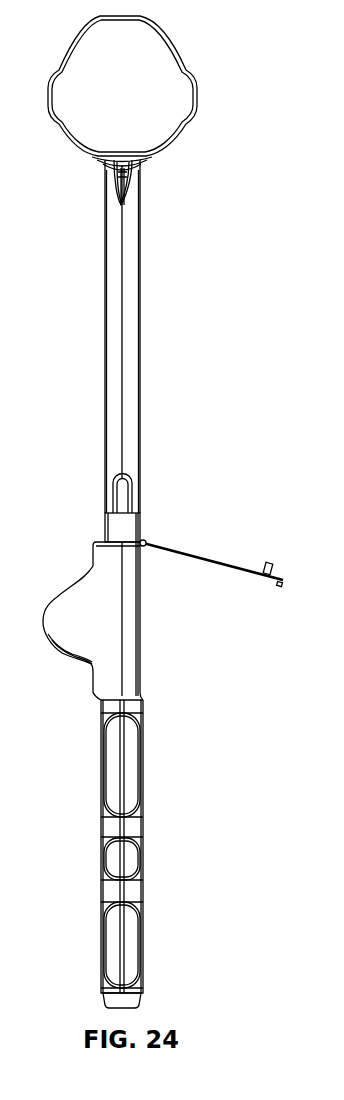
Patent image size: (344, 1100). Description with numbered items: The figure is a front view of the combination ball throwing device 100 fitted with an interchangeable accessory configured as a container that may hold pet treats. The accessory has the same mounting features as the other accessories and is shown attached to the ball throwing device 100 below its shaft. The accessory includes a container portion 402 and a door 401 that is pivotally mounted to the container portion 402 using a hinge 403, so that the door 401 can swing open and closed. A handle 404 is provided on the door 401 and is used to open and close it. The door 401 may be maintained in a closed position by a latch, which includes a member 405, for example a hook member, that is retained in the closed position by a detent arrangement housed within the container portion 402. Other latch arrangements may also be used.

The surgical instrument 100 is at (143, 325).
The door 401 is at (195, 552).
The container portion 402 is at (70, 633).
The hinge 403 is at (147, 538).
The handle 404 is at (273, 560).
The member 405 is at (282, 590).